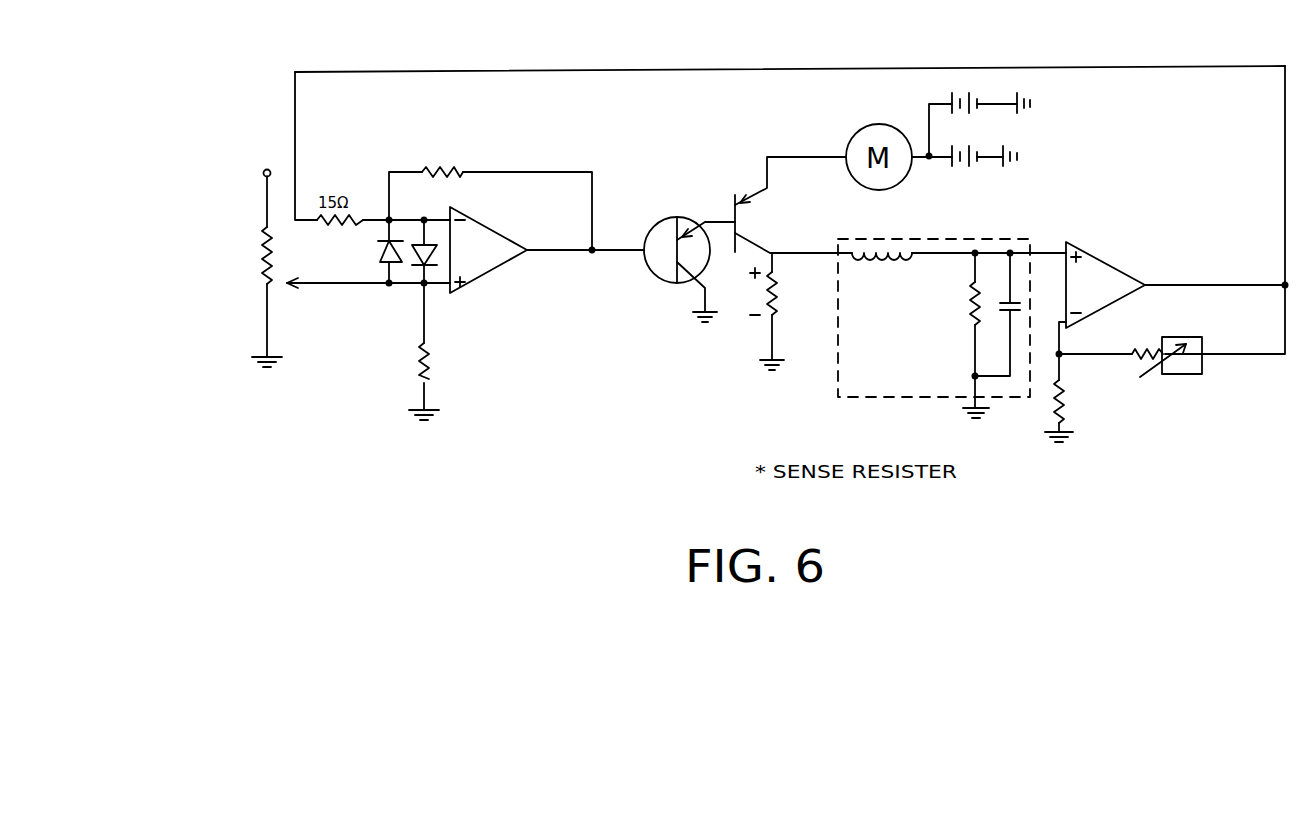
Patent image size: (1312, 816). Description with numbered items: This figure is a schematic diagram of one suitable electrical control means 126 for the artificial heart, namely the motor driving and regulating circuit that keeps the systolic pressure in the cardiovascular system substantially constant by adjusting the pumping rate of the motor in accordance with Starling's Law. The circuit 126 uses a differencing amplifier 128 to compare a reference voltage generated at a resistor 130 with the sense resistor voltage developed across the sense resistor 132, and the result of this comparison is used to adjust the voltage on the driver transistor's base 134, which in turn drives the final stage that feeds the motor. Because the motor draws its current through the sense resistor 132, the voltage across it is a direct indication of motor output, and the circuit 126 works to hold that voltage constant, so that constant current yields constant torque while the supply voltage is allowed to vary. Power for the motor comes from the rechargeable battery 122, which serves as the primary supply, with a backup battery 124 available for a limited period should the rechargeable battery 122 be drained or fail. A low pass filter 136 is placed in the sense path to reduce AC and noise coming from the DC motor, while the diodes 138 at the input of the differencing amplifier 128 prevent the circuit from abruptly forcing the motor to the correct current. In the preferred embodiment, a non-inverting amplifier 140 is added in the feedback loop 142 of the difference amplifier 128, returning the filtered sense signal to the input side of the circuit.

The rechargeable battery 122 is at (978, 142).
The backup battery 124 is at (986, 93).
The electrical control means 126 is at (611, 348).
The differencing amplifier 128 is at (500, 245).
The resistor 130 is at (267, 287).
The sense resistor 132 is at (776, 311).
The driver transistor's base 134 is at (609, 248).
The low pass filter 136 is at (990, 238).
The diodes 138 is at (370, 257).
The non-inverting amplifier 140 is at (1093, 237).
The feedback loop 142 is at (1287, 127).